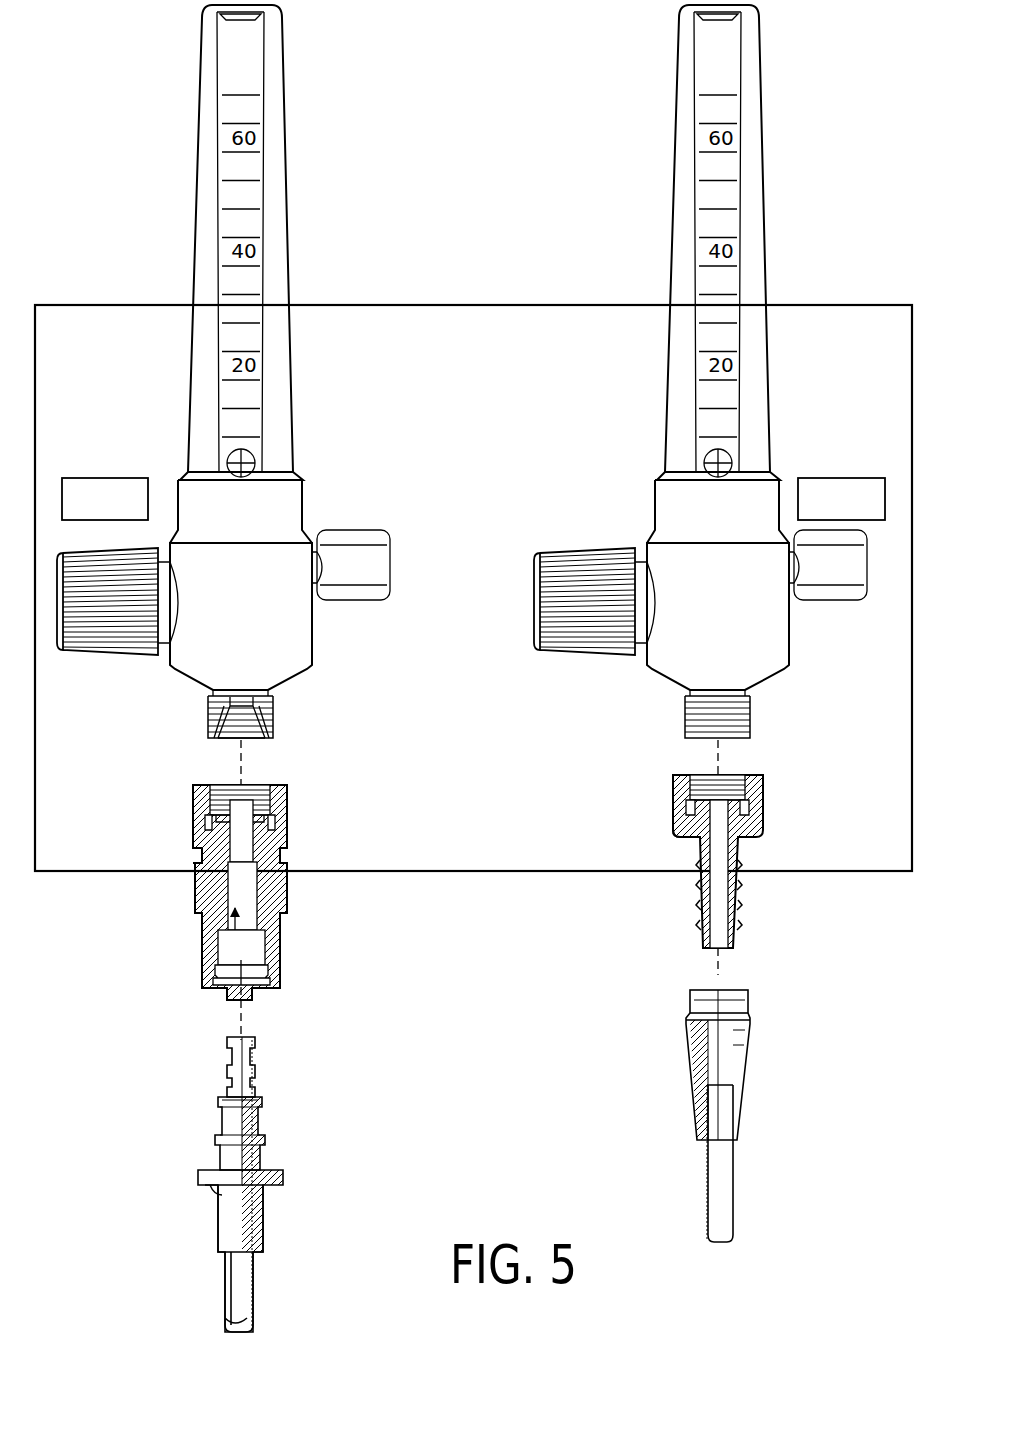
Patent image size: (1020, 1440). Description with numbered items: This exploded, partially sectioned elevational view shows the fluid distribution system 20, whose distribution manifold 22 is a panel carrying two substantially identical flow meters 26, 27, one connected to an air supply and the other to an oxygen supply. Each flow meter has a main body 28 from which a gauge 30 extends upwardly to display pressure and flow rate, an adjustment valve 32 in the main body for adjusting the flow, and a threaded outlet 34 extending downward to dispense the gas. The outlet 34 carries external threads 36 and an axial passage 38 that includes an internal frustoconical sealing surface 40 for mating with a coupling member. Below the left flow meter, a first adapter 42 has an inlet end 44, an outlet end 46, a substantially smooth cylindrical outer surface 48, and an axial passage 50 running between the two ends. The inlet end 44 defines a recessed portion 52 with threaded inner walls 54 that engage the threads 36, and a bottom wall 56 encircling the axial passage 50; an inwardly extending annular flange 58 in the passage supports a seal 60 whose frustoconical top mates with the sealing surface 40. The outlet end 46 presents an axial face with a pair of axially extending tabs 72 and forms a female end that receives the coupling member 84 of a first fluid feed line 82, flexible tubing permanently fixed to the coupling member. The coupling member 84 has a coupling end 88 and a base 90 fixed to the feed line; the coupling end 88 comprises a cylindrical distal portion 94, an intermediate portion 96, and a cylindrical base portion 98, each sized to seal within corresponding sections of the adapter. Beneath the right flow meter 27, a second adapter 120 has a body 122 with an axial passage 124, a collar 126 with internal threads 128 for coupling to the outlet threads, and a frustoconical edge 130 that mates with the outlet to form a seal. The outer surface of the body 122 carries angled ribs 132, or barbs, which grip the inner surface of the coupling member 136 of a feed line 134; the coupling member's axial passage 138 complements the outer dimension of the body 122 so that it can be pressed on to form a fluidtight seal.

The fluid distribution system 20 is at (473, 668).
The distribution manifold 22 is at (575, 332).
The flow meter 26 is at (312, 490).
The flow meter 27 is at (647, 489).
The main body 28 is at (305, 638).
The gauge 30 is at (289, 262).
The adjustment valve 32 is at (106, 657).
The threaded outlet 34 is at (272, 697).
The external threads 36 is at (273, 720).
The axial passage 38 is at (250, 738).
The internal frustoconical sealing surface 40 is at (228, 745).
The first adapter 42 is at (258, 888).
The inlet end 44 is at (268, 808).
The outlet end 46 is at (282, 975).
The cylindrical outer surface 48 is at (286, 900).
The axial passage 50 is at (218, 950).
The recessed portion 52 is at (268, 782).
The threaded inner walls 54 is at (225, 788).
The bottom wall 56 is at (205, 818).
The annular flange 58 is at (200, 887).
The seal 60 is at (205, 852).
The axially extending tabs 72 is at (222, 997).
The first fluid feed line 82 is at (262, 1297).
The coupling member 84 is at (288, 1166).
The coupling end 88 is at (252, 1176).
The base 90 is at (270, 1215).
The cylindrical distal portion 94 is at (230, 1068).
The intermediate portion 96 is at (222, 1122).
The cylindrical base portion 98 is at (205, 1165).
The second adapter 120 is at (731, 859).
The body 122 is at (672, 835).
The axial passage 124 is at (735, 858).
The collar 126 is at (762, 790).
The internal threads 128 is at (690, 782).
The frustoconical edge 130 is at (690, 805).
The ribs 132 is at (740, 915).
The feed line 134 is at (665, 1116).
The coupling member 136 is at (698, 1090).
The axial passage 138 is at (695, 1030).